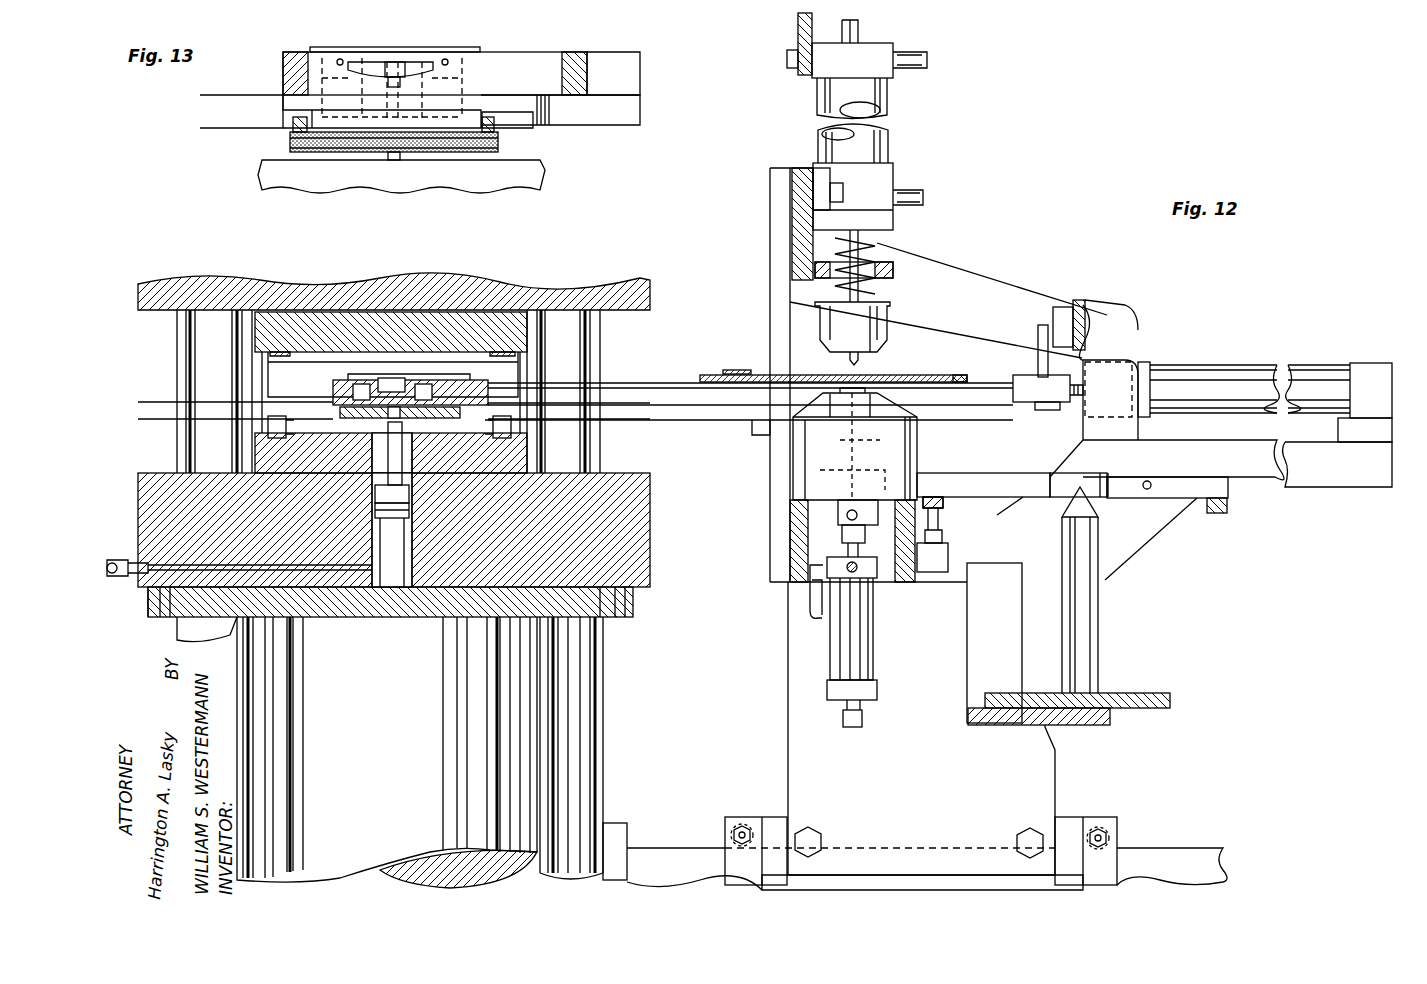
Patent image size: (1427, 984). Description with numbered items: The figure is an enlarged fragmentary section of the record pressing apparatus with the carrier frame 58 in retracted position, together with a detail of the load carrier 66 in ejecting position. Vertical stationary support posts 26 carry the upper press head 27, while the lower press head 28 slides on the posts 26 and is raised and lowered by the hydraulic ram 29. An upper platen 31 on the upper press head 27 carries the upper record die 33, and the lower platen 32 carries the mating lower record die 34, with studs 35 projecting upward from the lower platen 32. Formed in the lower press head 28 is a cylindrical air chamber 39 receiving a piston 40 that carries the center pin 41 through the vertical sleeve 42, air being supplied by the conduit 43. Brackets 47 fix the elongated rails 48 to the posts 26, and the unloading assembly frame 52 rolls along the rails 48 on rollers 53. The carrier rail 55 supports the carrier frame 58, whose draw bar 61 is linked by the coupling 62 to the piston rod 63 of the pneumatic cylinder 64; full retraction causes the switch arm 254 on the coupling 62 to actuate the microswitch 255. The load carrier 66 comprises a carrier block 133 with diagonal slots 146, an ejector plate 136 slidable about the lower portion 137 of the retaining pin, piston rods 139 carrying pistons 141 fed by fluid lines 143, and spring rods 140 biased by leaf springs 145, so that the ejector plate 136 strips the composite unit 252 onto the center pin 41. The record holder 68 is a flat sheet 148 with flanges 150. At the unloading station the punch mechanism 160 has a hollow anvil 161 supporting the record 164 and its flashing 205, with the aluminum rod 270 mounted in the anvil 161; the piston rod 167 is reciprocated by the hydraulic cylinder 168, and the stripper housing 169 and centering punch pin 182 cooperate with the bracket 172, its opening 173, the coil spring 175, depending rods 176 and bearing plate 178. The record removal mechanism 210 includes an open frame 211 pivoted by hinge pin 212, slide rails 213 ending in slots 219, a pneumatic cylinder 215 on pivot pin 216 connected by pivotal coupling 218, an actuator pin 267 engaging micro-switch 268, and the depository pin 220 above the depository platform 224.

In FIG. 12, the vertical stationary support post 26 is at (220, 358).
In FIG. 12, the upper press head 27 is at (197, 283).
In FIG. 12, the lower press head 28 is at (562, 562).
In FIG. 12, the hydraulic ram 29 is at (377, 682).
In FIG. 12, the upper platen 31 is at (316, 336).
In FIG. 13, the lower platen 32 is at (542, 178).
In FIG. 12, the lower platen 32 is at (270, 489).
In FIG. 12, the upper record die 33 is at (330, 360).
In FIG. 12, the lower record die 34 is at (391, 453).
In FIG. 12, the stud 35 is at (268, 436).
In FIG. 12, the cylindrical air chamber 39 is at (408, 542).
In FIG. 12, the piston 40 is at (409, 512).
In FIG. 13, the center pin 41 is at (388, 158).
In FIG. 12, the center pin 41 is at (341, 489).
In FIG. 12, the vertical sleeve 42 is at (410, 488).
In FIG. 12, the conduit 43 is at (116, 558).
In FIG. 12, the bracket 47 is at (615, 823).
In FIG. 12, the elongated rail 48 is at (1190, 860).
In FIG. 12, the unloading assembly frame 52 is at (950, 812).
In FIG. 12, the roller 53 is at (745, 818).
In FIG. 13, the carrier rail 55 is at (626, 118).
In FIG. 12, the carrier rail 55 is at (155, 402).
In FIG. 13, the carrier frame 58 is at (569, 46).
In FIG. 13, the draw bar 61 is at (632, 82).
In FIG. 12, the draw bar 61 is at (615, 375).
In FIG. 12, the coupling 62 is at (1045, 408).
In FIG. 12, the piston rod 63 is at (1073, 400).
In FIG. 12, the pneumatic cylinder 64 is at (1218, 399).
In FIG. 13, the load carrier 66 is at (508, 47).
In FIG. 12, the load carrier 66 is at (471, 373).
In FIG. 12, the record holder 68 is at (697, 366).
In FIG. 13, the carrier block 133 is at (483, 52).
In FIG. 12, the carrier block 133 is at (440, 380).
In FIG. 13, the ejector plate 136 is at (292, 128).
In FIG. 12, the ejector plate 136 is at (333, 388).
In FIG. 13, the lower portion of retaining pin 137 is at (412, 116).
In FIG. 12, the lower portion of retaining pin 137 is at (388, 430).
In FIG. 13, the piston rod 139 is at (470, 72).
In FIG. 13, the spring rod 140 is at (392, 62).
In FIG. 13, the piston 141 is at (468, 89).
In FIG. 12, the piston 141 is at (335, 377).
In FIG. 13, the fluid line 143 is at (341, 59).
In FIG. 13, the leaf spring 145 is at (380, 62).
In FIG. 13, the diagonal slot 146 is at (522, 128).
In FIG. 12, the flat sheet material 148 is at (710, 405).
In FIG. 12, the flange 150 is at (740, 370).
In FIG. 12, the punch mechanism 160 is at (928, 173).
In FIG. 12, the hollow anvil 161 is at (839, 454).
In FIG. 12, the phonograph record 164 is at (922, 375).
In FIG. 12, the piston rod 167 is at (888, 296).
In FIG. 12, the hydraulic cylinder 168 is at (888, 145).
In FIG. 12, the stripper housing 169 is at (860, 326).
In FIG. 12, the bracket 172 is at (884, 254).
In FIG. 12, the opening 173 is at (893, 270).
In FIG. 12, the coil spring 175 is at (876, 240).
In FIG. 12, the depending rod 176 is at (812, 295).
In FIG. 12, the bearing plate 178 is at (815, 306).
In FIG. 12, the centering punch pin 182 is at (848, 358).
In FIG. 12, the flashing 205 is at (965, 373).
In FIG. 12, the record removal mechanism 210 is at (1188, 544).
In FIG. 12, the open frame 211 is at (1228, 490).
In FIG. 12, the hinge pin 212 is at (1148, 481).
In FIG. 12, the slide rail 213 is at (960, 465).
In FIG. 12, the pneumatic cylinder 215 is at (855, 636).
In FIG. 12, the pivot pin 216 is at (865, 596).
In FIG. 12, the pivotal coupling 218 is at (845, 515).
In FIG. 12, the slot 219 is at (1063, 480).
In FIG. 12, the depository pin 220 is at (1095, 638).
In FIG. 12, the depository platform 224 is at (1120, 694).
In FIG. 13, the composite unit 252 is at (292, 150).
In FIG. 12, the composite unit 252 is at (440, 425).
In FIG. 12, the switch arm 254 is at (1040, 312).
In FIG. 12, the microswitch 255 is at (1066, 310).
In FIG. 12, the actuator pin 267 is at (943, 522).
In FIG. 12, the micro-switch 268 is at (948, 558).
In FIG. 12, the aluminum rod 270 is at (917, 440).